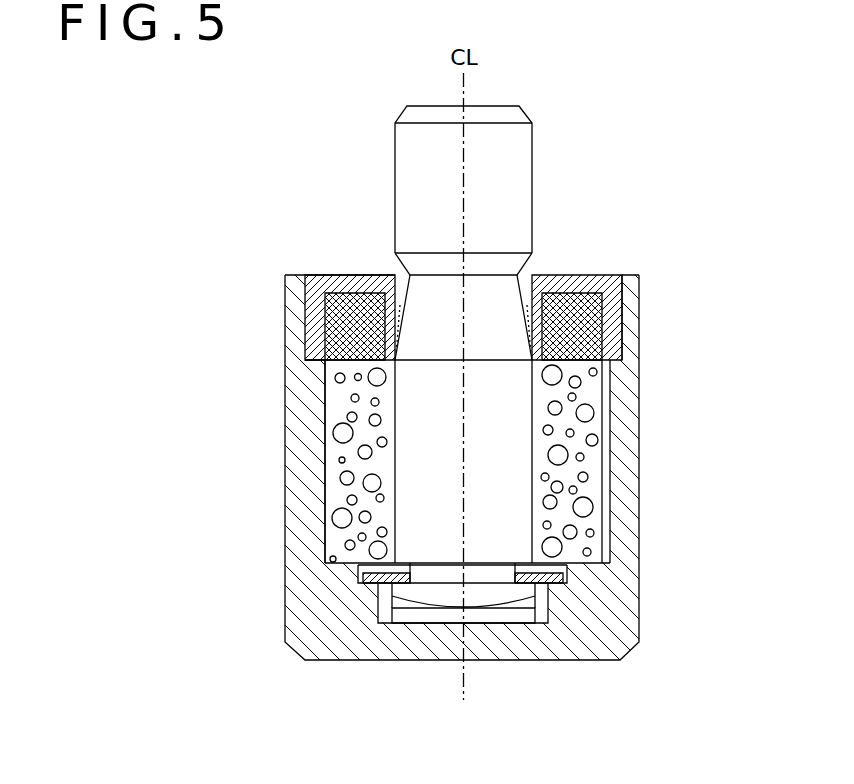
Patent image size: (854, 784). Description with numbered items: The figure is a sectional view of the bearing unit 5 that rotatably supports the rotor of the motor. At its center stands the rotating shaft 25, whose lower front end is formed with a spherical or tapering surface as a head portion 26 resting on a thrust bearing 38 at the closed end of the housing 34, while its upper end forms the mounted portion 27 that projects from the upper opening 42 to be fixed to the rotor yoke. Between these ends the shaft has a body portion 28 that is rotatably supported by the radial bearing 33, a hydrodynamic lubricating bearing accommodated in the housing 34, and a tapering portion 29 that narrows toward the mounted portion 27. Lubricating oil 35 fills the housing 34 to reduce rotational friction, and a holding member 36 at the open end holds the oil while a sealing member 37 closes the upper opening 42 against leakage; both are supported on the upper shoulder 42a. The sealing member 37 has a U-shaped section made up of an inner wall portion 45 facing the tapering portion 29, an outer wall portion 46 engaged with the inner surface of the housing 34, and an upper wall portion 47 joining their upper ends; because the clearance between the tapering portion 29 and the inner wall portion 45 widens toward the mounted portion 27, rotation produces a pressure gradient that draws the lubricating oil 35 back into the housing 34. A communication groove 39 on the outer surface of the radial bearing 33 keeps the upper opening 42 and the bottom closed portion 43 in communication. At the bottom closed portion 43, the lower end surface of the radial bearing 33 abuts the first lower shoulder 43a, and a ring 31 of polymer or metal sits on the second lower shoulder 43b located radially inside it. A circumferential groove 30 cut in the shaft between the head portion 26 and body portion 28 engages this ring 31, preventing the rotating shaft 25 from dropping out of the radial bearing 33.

The bearing unit 5 is at (620, 60).
The rotating shaft 25 is at (533, 138).
The head portion 26 is at (420, 593).
The mounted portion 27 is at (405, 144).
The body portion 28 is at (507, 469).
The tapering portion 29 is at (521, 298).
The circumferential groove 30 is at (410, 568).
The ring 31 is at (358, 577).
The radial bearing 33 is at (592, 492).
The housing 34 is at (285, 297).
The lubricating oil 35 is at (323, 320).
The holding member 36 is at (602, 298).
The sealing member 37 is at (582, 273).
The thrust bearing 38 is at (513, 615).
The communication groove 39 is at (614, 407).
The upper opening 42 is at (308, 277).
The upper shoulder 42a is at (300, 348).
The bottom closed portion 43 is at (383, 612).
The first lower shoulder 43a is at (580, 556).
The second lower shoulder 43b is at (570, 573).
The inner wall portion 45 is at (402, 277).
The outer wall portion 46 is at (622, 345).
The upper wall portion 47 is at (345, 275).